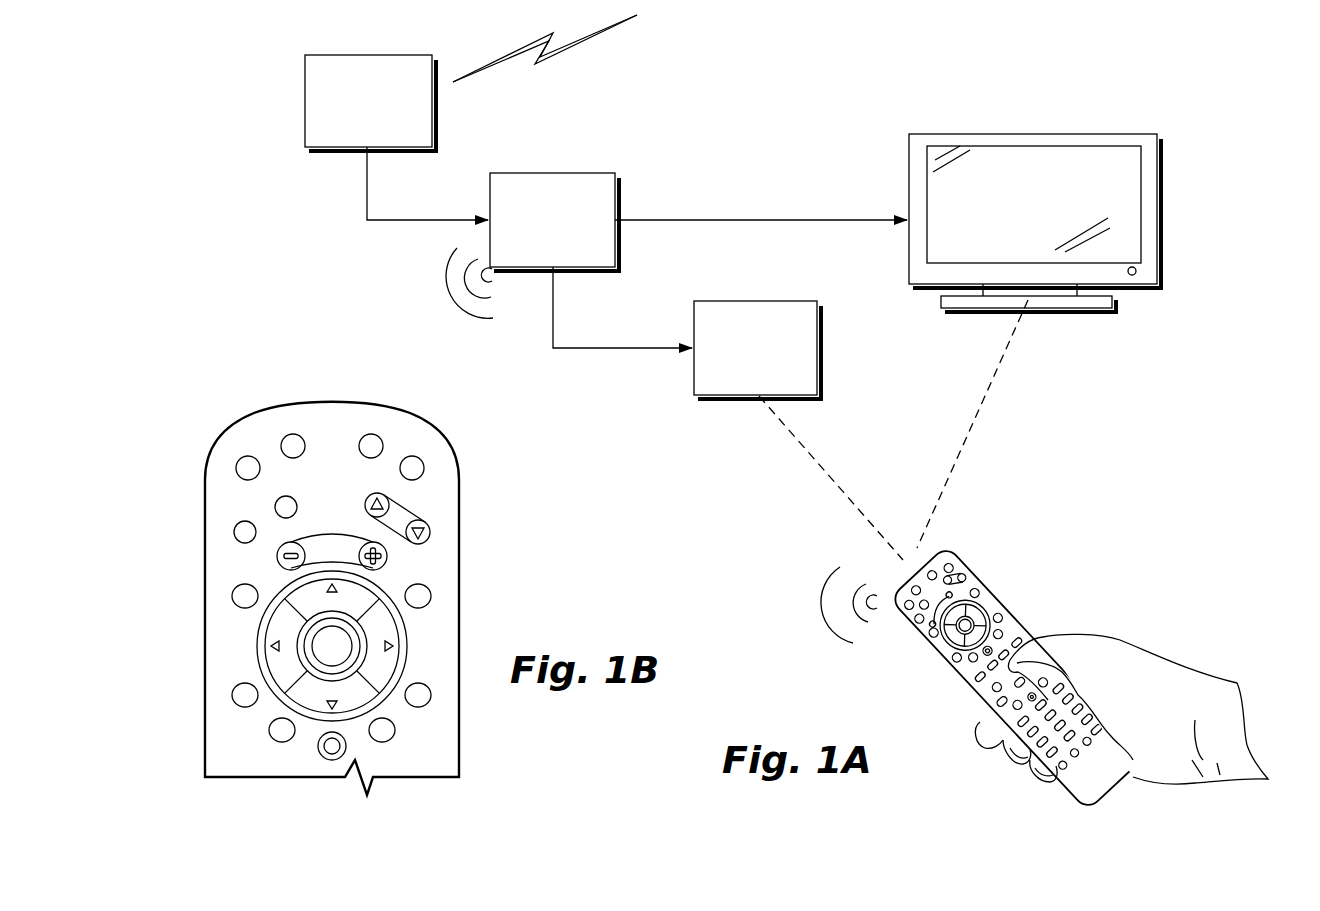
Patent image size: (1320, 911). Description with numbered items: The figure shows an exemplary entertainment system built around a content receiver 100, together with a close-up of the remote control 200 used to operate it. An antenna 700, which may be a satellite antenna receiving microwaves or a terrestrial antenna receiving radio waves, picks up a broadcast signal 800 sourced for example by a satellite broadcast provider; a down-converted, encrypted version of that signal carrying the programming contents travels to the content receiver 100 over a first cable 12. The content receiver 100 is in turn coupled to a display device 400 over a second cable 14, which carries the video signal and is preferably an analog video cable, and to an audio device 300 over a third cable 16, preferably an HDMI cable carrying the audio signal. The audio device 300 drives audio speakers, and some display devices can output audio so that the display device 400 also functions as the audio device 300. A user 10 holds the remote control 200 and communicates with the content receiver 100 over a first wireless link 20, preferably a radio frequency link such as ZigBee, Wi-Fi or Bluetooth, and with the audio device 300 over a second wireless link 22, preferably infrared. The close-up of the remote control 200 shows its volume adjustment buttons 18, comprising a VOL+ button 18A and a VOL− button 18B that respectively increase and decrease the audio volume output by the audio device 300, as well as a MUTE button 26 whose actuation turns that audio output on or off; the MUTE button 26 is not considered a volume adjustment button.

In FIG. 1A, the antenna 700 is at (303, 105).
In FIG. 1A, the signal 800 is at (612, 30).
In FIG. 1A, the content receiver 100 is at (553, 173).
In FIG. 1A, the first cable 12 is at (397, 222).
In FIG. 1A, the second cable 14 is at (680, 222).
In FIG. 1A, the third cable 16 is at (618, 348).
In FIG. 1A, the audio device 300 is at (757, 301).
In FIG. 1A, the display device 400 is at (1161, 206).
In FIG. 1A, the second wireless link 22 is at (849, 496).
In FIG. 1A, the first wireless link 20 is at (493, 317).
In FIG. 1A, the remote control 200 is at (989, 585).
In FIG. 1B, the remote control 200 is at (459, 483).
In FIG. 1A, the user 10 is at (1151, 651).
In FIG. 1B, the volume adjustment buttons 18 is at (332, 536).
In FIG. 1B, the VOL+ button 18A is at (387, 555).
In FIG. 1B, the VOL− button 18B is at (277, 559).
In FIG. 1B, the MUTE button 26 is at (234, 533).